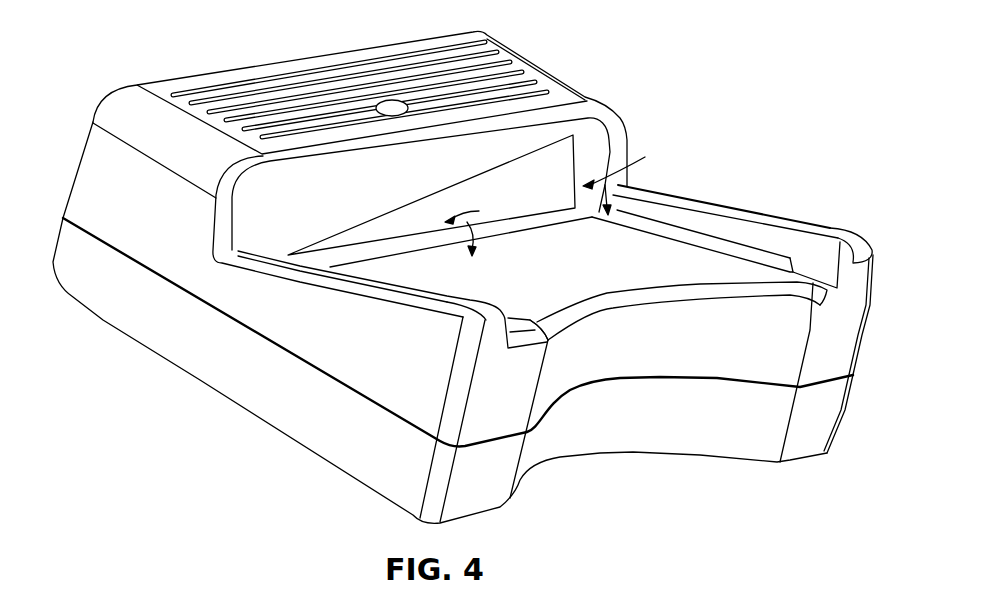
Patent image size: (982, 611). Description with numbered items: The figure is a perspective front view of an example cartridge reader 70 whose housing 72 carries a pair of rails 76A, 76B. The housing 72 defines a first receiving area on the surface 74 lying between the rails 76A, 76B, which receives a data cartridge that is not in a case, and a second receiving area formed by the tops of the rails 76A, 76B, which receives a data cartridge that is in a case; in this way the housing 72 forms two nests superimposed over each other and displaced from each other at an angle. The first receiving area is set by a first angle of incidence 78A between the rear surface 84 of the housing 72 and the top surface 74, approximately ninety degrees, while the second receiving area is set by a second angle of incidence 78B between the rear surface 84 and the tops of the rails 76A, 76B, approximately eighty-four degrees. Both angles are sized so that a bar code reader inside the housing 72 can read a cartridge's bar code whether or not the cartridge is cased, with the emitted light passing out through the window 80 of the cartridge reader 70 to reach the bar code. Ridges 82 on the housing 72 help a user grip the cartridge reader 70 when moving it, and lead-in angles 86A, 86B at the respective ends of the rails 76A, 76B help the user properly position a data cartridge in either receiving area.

The cartridge reader 70 is at (463, 272).
The housing 72 is at (647, 352).
The surface 74 is at (618, 278).
The rail 76A is at (510, 318).
The rail 76B is at (753, 258).
The first angle of incidence 78A is at (476, 225).
The second angle of incidence 78B is at (627, 177).
The window 80 is at (447, 189).
The ridges 82 is at (320, 97).
The rear surface 84 is at (240, 220).
The lead-in angle 86A is at (548, 340).
The lead-in angle 86B is at (840, 240).